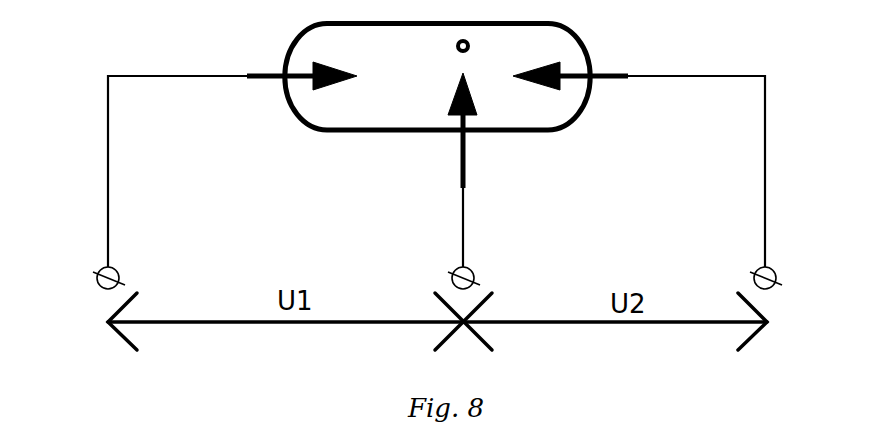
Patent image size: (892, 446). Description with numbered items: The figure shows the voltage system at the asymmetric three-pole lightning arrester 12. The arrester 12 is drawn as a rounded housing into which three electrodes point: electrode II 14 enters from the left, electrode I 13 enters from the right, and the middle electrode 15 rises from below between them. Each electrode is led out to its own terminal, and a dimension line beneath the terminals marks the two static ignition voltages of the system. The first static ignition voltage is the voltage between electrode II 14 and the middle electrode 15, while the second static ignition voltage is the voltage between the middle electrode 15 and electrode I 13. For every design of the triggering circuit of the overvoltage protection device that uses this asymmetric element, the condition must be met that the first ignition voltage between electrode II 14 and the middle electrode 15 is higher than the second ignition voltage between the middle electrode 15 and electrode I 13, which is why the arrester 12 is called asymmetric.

The asymmetric three-pole lightning arrester 12 is at (397, 150).
The electrode I 13 is at (607, 87).
The electrode II 14 is at (268, 90).
The middle electrode 15 is at (480, 143).